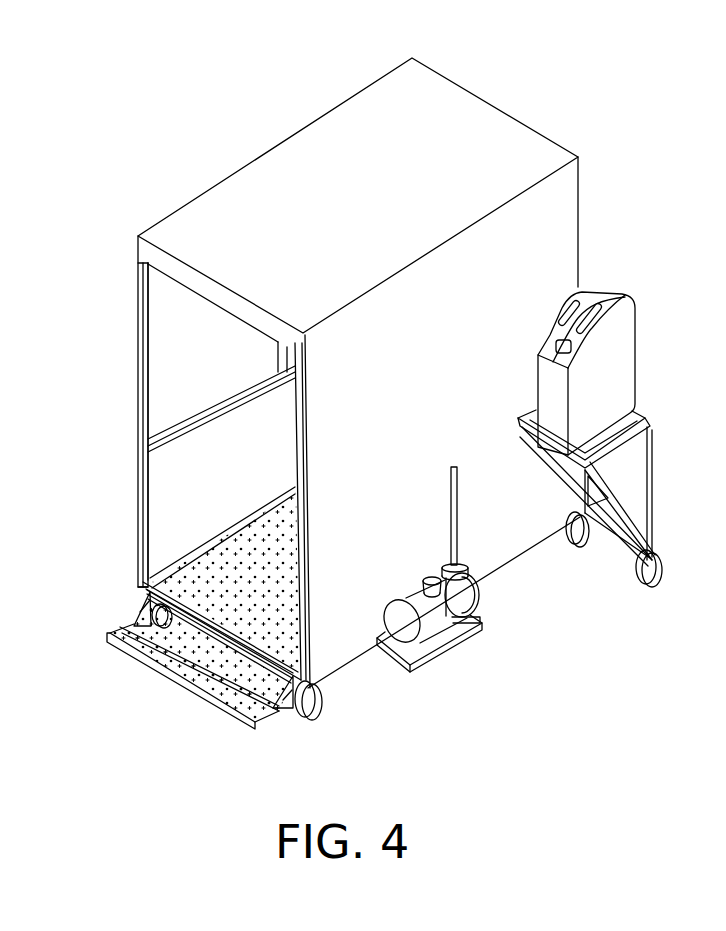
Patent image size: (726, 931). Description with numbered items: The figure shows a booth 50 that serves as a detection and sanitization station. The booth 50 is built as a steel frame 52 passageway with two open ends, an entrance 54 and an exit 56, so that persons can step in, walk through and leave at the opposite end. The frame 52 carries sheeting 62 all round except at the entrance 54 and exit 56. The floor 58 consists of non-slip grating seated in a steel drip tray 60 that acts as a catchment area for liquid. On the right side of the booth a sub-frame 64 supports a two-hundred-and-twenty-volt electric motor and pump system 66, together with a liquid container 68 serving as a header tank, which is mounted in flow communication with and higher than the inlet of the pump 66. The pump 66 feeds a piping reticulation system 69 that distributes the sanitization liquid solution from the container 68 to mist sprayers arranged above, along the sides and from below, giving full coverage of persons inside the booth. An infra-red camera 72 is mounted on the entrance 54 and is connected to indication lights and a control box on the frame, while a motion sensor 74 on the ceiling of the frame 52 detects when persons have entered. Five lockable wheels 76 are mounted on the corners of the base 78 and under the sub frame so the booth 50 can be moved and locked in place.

The booth 50 is at (275, 117).
The steel frame 52 is at (140, 368).
The entrance 54 is at (194, 524).
The exit 56 is at (487, 77).
The floor 58 is at (202, 563).
The drip tray 60 is at (145, 588).
The sheeting 62 is at (390, 105).
The sub-frame 64 is at (457, 650).
The electric motor and pump system 66 is at (472, 593).
The liquid container 68 is at (600, 286).
The piping reticulation system 69 is at (441, 478).
The infra-red camera 72 is at (138, 248).
The motion sensor 74 is at (220, 297).
The lockable wheels 76 is at (165, 622).
The base 78 is at (327, 681).